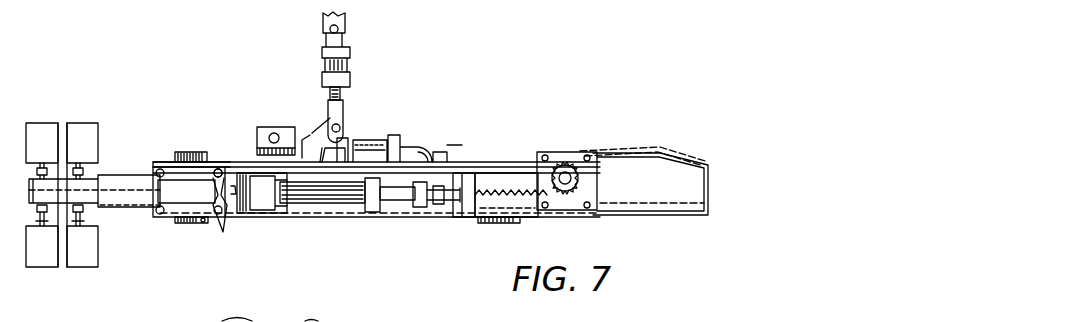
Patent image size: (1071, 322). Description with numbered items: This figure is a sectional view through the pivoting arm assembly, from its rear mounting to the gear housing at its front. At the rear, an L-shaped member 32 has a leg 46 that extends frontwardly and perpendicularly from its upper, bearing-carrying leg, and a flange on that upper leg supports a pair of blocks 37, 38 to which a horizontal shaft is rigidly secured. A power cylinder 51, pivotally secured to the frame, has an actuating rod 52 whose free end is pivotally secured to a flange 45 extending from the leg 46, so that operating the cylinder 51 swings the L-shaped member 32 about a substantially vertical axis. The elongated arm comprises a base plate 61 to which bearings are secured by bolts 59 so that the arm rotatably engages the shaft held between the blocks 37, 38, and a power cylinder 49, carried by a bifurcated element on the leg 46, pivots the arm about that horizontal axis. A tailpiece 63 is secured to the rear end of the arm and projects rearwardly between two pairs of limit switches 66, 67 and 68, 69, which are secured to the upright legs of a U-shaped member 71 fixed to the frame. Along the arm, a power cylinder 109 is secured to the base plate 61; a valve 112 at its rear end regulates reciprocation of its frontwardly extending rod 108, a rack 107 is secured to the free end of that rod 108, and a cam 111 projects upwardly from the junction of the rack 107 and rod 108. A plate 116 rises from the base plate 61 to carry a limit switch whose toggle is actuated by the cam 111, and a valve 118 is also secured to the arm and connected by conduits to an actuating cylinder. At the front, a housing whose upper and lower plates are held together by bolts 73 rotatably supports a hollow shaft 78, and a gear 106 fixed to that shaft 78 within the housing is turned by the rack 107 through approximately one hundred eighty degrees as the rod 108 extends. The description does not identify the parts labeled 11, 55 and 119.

The apparatus 11 is at (445, 92).
The L-shaped member 32 is at (203, 145).
The block 37 is at (178, 150).
The block 38 is at (187, 223).
The flange 45 is at (308, 130).
The leg 46 is at (240, 165).
The power cylinder 49 is at (365, 150).
The power cylinder 51 is at (345, 62).
The actuating rod 52 is at (330, 93).
The pivot pin 55 is at (229, 172).
The bolts 59 is at (220, 232).
The base plate 61 is at (418, 207).
The tailpiece 63 is at (123, 185).
The limit switch 66 is at (36, 135).
The limit switch 67 is at (85, 135).
The limit switch 68 is at (38, 258).
The limit switch 69 is at (82, 258).
The U-shaped member 71 is at (62, 262).
The bolts 73 is at (546, 156).
The shaft 78 is at (568, 168).
The gear 106 is at (560, 205).
The rack 107 is at (495, 190).
The rod 108 is at (400, 200).
The power cylinder 109 is at (330, 205).
The cam 111 is at (470, 212).
The valve 112 is at (258, 205).
The plate 116 is at (505, 224).
The valve 118 is at (271, 127).
The handle 119 is at (708, 190).